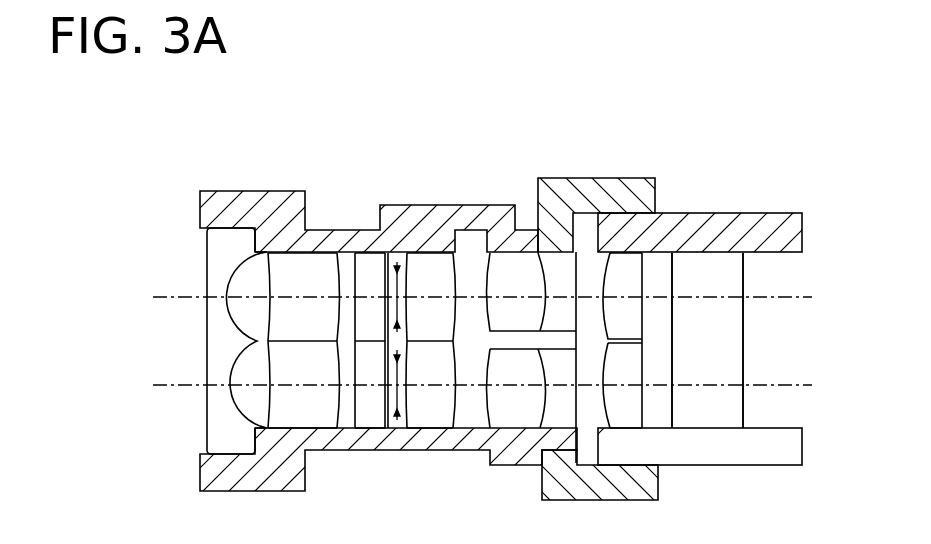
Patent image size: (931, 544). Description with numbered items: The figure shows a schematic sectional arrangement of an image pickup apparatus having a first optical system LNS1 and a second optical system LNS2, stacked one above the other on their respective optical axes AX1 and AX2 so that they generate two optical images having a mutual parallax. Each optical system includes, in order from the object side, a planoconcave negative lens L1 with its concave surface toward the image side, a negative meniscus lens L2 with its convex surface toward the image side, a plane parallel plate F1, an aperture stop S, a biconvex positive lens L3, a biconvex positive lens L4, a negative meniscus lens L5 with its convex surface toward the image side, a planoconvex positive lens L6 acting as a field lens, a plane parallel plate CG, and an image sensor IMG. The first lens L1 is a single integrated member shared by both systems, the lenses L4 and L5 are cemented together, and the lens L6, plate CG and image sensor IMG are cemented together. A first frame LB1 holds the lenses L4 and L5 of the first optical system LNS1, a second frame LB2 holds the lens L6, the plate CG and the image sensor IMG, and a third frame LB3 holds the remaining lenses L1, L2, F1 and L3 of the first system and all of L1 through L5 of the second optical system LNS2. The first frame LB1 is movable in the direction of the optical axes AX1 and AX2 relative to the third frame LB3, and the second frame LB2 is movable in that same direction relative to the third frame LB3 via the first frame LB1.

The planoconcave negative lens L1 is at (223, 247).
The negative meniscus lens L2 is at (312, 268).
The biconvex positive lens L3 is at (432, 270).
The biconvex positive lens L4 is at (512, 266).
The negative meniscus lens L5 is at (622, 268).
The planoconvex positive lens L6 is at (656, 268).
The plane parallel plate F1 is at (366, 266).
The aperture stop S is at (397, 260).
The first frame LB1 is at (602, 158).
The second frame LB2 is at (690, 192).
The third frame LB3 is at (478, 182).
The plane parallel plate CG is at (678, 262).
The image sensor IMG is at (722, 303).
The first optical system LNS1 is at (188, 249).
The second optical system LNS2 is at (188, 407).
The optical axis AX1 is at (172, 297).
The optical axis AX2 is at (172, 385).